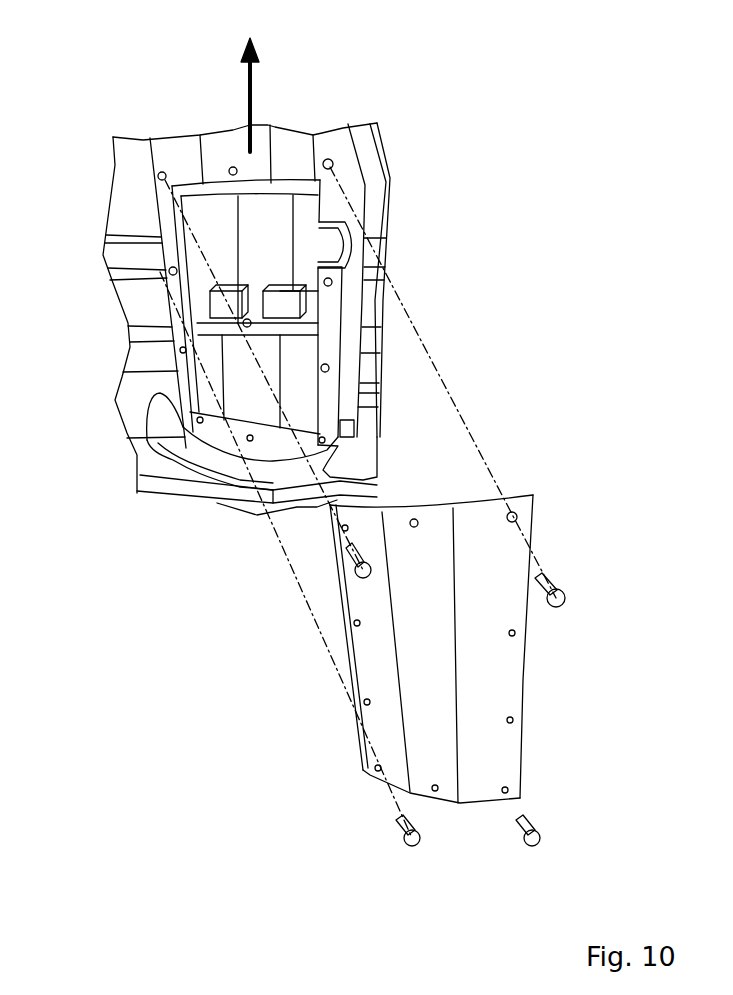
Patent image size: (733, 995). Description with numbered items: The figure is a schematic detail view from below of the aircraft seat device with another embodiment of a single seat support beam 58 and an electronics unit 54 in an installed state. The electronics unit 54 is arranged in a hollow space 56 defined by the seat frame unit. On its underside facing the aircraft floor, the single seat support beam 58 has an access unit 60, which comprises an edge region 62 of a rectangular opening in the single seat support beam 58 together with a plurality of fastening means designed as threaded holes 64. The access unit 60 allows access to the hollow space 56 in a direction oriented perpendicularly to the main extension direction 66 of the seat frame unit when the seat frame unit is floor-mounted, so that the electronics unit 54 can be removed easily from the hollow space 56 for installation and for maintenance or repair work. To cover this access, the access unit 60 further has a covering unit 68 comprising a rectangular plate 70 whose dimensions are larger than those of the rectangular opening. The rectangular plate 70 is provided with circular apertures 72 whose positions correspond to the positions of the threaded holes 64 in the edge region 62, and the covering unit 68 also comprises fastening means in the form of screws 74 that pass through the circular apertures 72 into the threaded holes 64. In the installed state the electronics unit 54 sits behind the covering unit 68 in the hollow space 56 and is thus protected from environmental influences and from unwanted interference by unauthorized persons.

The electronics unit 54 is at (233, 376).
The hollow space 56 is at (217, 236).
The single seat support beam 58 is at (185, 157).
The access unit 60 is at (385, 318).
The edge region 62 is at (230, 297).
The threaded holes 64 is at (340, 168).
The main extension direction 66 is at (247, 100).
The covering unit 68 is at (555, 432).
The rectangular plate 70 is at (433, 705).
The circular apertures 72 is at (345, 622).
The screws 74 is at (558, 580).